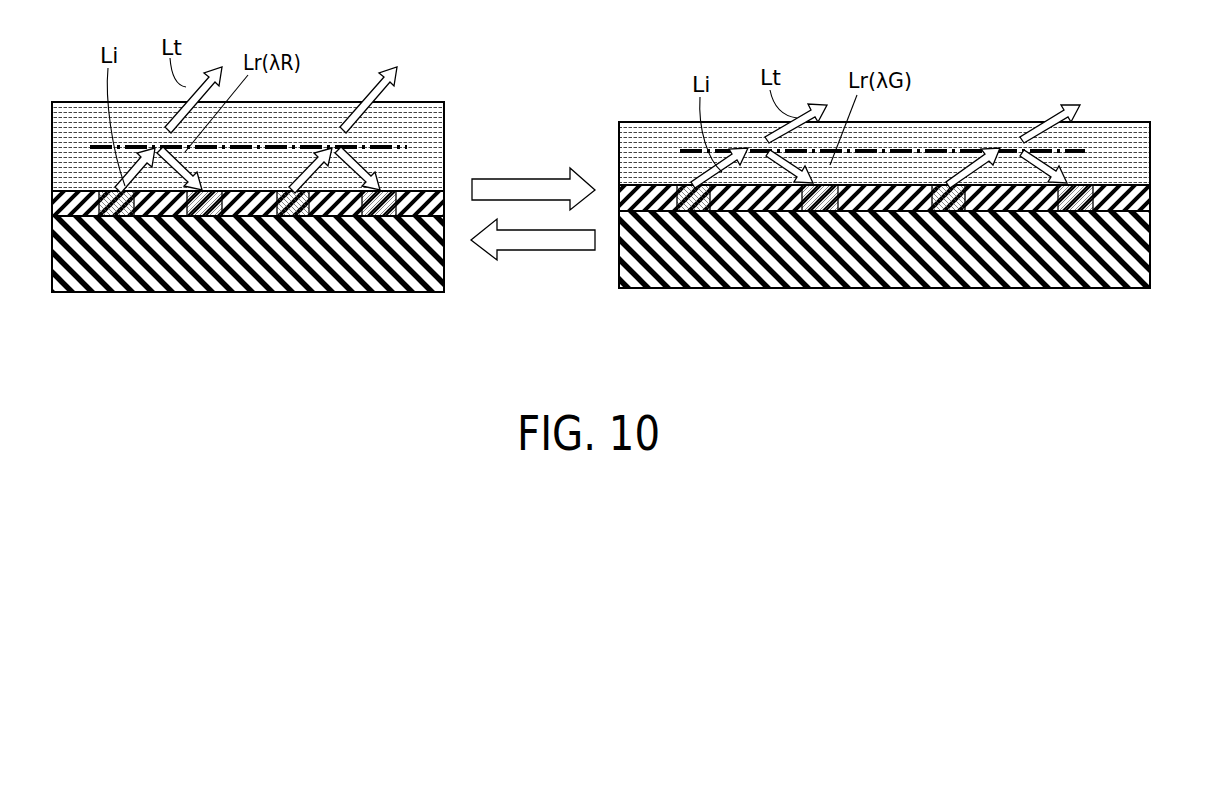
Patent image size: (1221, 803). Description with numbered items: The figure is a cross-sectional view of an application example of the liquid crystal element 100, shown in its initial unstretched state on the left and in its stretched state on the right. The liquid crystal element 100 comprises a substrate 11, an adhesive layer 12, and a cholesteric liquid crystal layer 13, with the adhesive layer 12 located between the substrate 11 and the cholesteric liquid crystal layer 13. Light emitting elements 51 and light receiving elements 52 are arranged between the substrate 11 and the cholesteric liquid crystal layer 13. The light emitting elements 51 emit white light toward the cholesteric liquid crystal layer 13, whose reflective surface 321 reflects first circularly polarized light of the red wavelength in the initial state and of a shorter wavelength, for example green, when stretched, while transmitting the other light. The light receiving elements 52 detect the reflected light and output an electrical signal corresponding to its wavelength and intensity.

The substrate 11 is at (57, 257).
The adhesive layer 12 is at (57, 207).
The cholesteric liquid crystal layer 13 is at (57, 133).
The light emitting element 51 is at (114, 216).
The light receiving element 52 is at (205, 216).
The reflective surface 321 is at (407, 142).
The liquid crystal element 100 is at (436, 320).